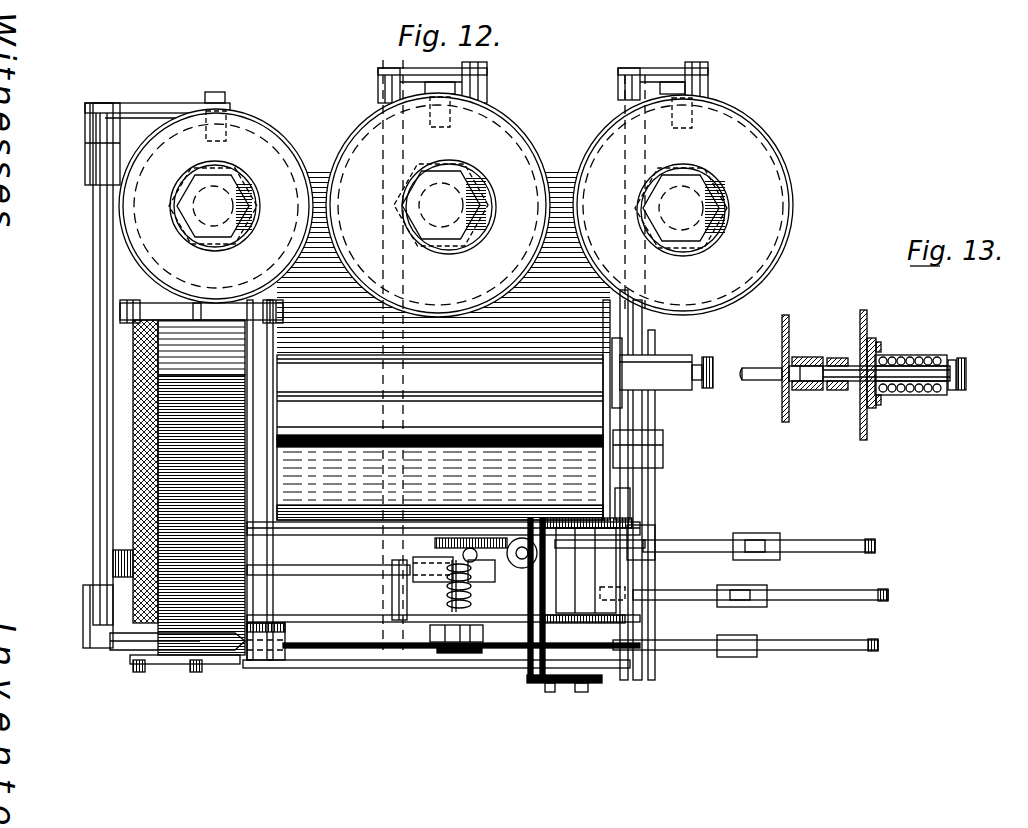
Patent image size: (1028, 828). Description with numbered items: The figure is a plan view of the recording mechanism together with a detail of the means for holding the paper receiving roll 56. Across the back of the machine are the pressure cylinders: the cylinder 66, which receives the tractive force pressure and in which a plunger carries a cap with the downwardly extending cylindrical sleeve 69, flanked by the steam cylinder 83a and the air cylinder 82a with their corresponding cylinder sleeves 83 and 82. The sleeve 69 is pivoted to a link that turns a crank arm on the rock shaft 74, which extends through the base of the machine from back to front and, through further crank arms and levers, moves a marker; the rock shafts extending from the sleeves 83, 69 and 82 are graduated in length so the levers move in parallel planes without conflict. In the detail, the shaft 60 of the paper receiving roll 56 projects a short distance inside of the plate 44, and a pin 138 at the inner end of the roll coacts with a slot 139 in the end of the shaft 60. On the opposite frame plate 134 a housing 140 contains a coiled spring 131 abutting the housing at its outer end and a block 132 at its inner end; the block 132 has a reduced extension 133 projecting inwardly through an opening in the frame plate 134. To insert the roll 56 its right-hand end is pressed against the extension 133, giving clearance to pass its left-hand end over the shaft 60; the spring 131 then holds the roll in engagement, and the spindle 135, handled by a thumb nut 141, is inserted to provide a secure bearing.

In FIG. 13, the plate 44 is at (783, 420).
In FIG. 13, the paper receiving roll 56 is at (823, 358).
In FIG. 13, the shaft 60 is at (762, 384).
In FIG. 12, the cylinder 66 is at (478, 198).
In FIG. 12, the cylindrical sleeve 69 is at (492, 122).
In FIG. 12, the rock shaft 74 is at (385, 334).
In FIG. 12, the cylinder sleeve 82 is at (740, 128).
In FIG. 12, the air cylinder 82a is at (722, 194).
In FIG. 12, the cylinder sleeve 83 is at (297, 126).
In FIG. 12, the steam cylinder 83a is at (214, 172).
In FIG. 13, the coiled spring 131 is at (928, 364).
In FIG. 13, the block 132 is at (872, 412).
In FIG. 13, the reduced extension 133 is at (861, 393).
In FIG. 13, the frame plate 134 is at (868, 314).
In FIG. 13, the spindle 135 is at (951, 368).
In FIG. 13, the pin 138 is at (797, 357).
In FIG. 13, the slot 139 is at (800, 392).
In FIG. 12, the housing 140 is at (660, 364).
In FIG. 13, the housing 140 is at (900, 356).
In FIG. 12, the thumb nut 141 is at (710, 392).
In FIG. 13, the thumb nut 141 is at (967, 380).